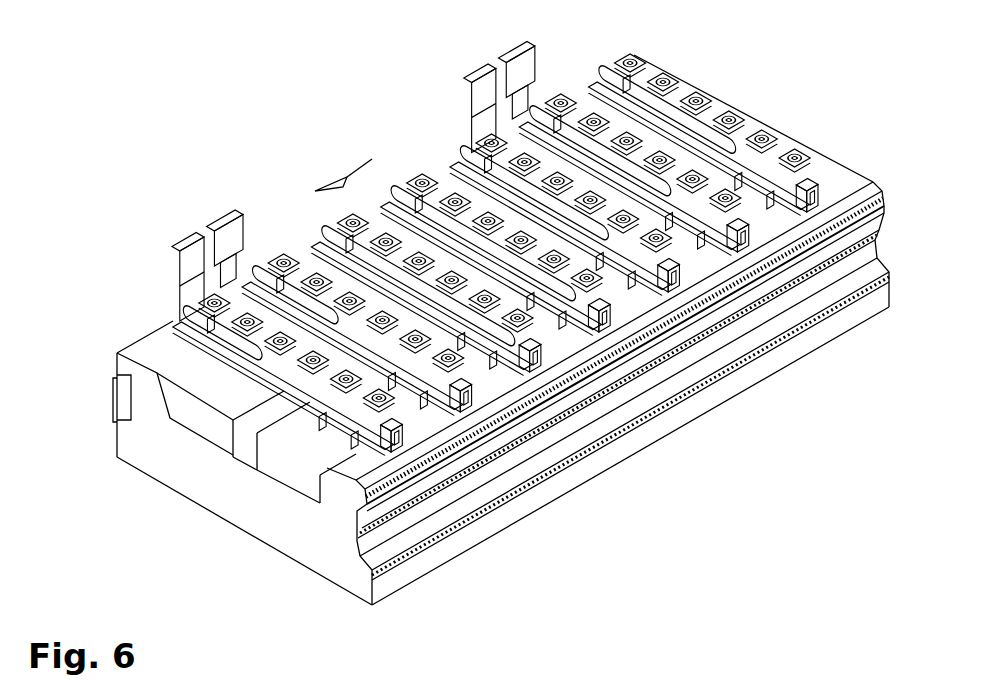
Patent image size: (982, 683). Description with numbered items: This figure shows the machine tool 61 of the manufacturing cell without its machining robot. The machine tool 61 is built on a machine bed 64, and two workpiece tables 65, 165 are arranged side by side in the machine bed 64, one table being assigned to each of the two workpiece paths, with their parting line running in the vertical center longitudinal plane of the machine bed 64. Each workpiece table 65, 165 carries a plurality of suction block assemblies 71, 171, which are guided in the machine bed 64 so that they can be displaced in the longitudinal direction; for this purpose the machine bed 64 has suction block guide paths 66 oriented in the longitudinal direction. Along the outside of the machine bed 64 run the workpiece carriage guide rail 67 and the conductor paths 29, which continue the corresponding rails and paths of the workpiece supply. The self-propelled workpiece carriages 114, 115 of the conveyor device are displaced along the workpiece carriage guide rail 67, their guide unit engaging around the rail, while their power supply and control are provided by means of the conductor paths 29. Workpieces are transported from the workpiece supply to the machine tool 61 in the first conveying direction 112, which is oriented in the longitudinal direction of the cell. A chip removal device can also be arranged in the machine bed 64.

The conductor paths 29 is at (367, 540).
The machine tool 61 is at (408, 142).
The machine bed 64 is at (188, 465).
The workpiece table 65 is at (266, 242).
The suction block guide paths 66 is at (237, 418).
The workpiece carriage guide rail 67 is at (563, 381).
The suction block assembly 71 is at (306, 214).
The first conveying direction 112 is at (349, 171).
The workpiece carriage 114 is at (481, 95).
The workpiece carriage 115 is at (188, 253).
The workpiece table 165 is at (383, 415).
The suction block assembly 171 is at (455, 413).